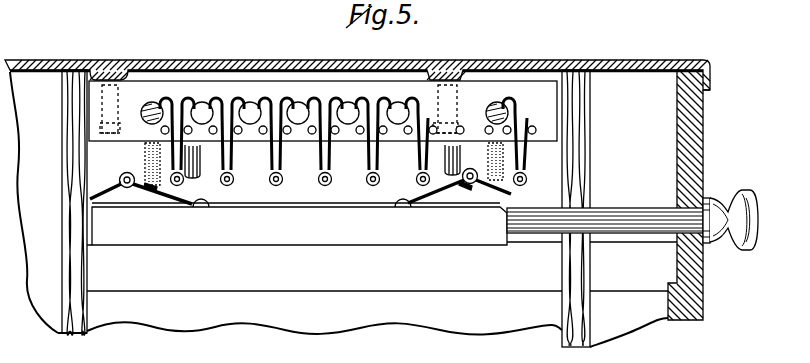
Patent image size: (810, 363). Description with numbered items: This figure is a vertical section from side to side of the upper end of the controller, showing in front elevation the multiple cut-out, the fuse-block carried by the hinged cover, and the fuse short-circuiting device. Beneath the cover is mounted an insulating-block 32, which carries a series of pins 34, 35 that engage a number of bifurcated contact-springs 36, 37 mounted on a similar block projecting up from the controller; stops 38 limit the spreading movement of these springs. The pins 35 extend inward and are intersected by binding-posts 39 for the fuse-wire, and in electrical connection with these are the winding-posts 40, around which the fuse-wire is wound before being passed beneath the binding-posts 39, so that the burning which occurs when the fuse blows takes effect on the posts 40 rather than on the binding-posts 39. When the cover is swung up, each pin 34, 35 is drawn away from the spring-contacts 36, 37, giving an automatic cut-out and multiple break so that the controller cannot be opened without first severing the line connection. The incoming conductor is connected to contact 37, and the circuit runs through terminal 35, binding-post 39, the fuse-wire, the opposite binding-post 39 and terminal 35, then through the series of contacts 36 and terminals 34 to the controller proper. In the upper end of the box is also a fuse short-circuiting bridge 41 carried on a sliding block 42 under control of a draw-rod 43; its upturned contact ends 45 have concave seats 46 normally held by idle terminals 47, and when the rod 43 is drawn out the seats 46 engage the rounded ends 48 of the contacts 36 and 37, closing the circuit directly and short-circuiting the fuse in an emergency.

The insulating-block 32 is at (503, 90).
The pins 34 is at (201, 108).
The pins 35 is at (151, 103).
The bifurcated contact-springs 36 is at (184, 163).
The bifurcated contact-spring 37 is at (711, 68).
The stops 38 is at (374, 115).
The binding-posts 39 is at (145, 164).
The winding-posts 40 is at (199, 178).
The fuse short-circuiting bridge 41 is at (323, 142).
The sliding block 42 is at (299, 226).
The draw-rod 43 is at (608, 213).
The upturned contact ends 45 is at (151, 191).
The concave seats 46 is at (127, 188).
The idle terminals 47 is at (119, 182).
The rounded ends 48 is at (190, 200).